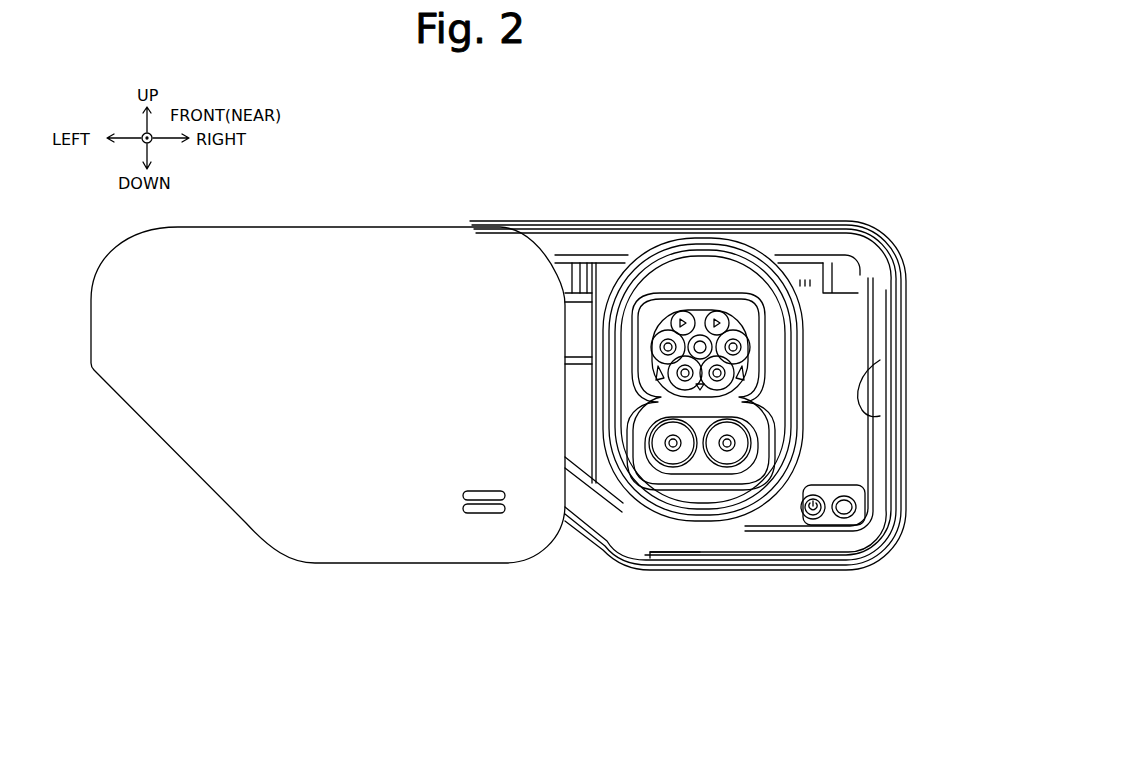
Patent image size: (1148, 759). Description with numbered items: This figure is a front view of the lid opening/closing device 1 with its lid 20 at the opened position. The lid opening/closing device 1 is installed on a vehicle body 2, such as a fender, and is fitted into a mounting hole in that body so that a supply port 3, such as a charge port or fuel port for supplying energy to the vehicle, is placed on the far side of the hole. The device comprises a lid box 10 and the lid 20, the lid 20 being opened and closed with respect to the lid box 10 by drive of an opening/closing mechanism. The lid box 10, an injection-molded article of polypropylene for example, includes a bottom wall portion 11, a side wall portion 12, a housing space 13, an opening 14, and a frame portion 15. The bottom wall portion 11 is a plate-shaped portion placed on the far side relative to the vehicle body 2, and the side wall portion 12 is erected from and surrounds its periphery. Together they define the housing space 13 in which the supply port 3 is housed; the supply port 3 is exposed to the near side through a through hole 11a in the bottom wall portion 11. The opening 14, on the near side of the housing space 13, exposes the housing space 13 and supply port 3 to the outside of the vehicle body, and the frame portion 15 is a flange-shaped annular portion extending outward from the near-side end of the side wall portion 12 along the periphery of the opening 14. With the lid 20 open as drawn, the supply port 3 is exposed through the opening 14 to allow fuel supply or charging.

The lid opening/closing device 1 is at (229, 517).
The vehicle body 2 is at (930, 498).
The supply port 3 is at (709, 286).
The lid box 10 is at (657, 567).
The bottom wall portion 11 is at (827, 320).
The through hole 11a is at (747, 273).
The side wall portion 12 is at (880, 416).
The housing space 13 is at (622, 497).
The opening 14 is at (720, 550).
The frame portion 15 is at (597, 222).
The lid 20 is at (352, 518).